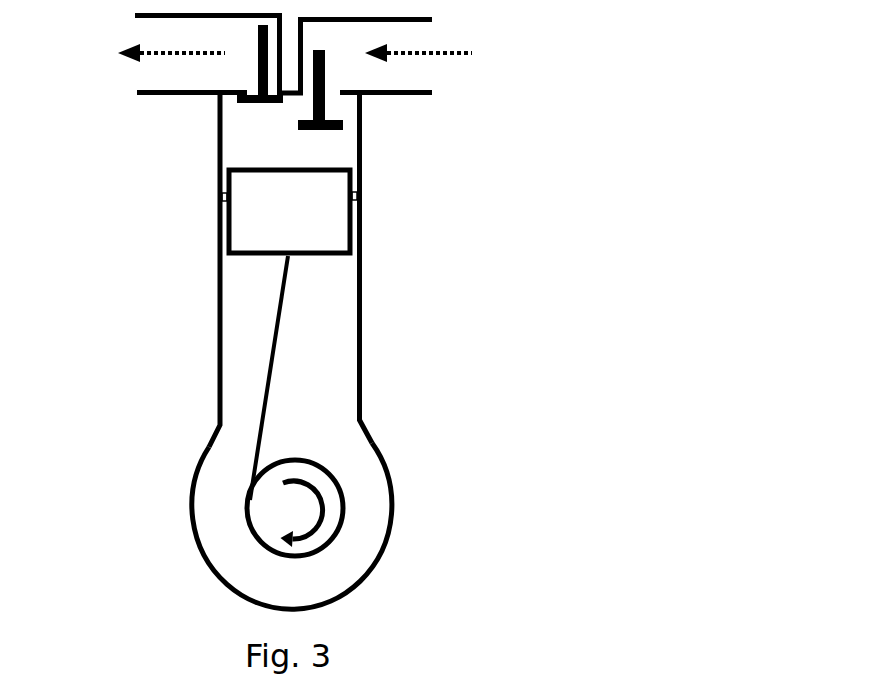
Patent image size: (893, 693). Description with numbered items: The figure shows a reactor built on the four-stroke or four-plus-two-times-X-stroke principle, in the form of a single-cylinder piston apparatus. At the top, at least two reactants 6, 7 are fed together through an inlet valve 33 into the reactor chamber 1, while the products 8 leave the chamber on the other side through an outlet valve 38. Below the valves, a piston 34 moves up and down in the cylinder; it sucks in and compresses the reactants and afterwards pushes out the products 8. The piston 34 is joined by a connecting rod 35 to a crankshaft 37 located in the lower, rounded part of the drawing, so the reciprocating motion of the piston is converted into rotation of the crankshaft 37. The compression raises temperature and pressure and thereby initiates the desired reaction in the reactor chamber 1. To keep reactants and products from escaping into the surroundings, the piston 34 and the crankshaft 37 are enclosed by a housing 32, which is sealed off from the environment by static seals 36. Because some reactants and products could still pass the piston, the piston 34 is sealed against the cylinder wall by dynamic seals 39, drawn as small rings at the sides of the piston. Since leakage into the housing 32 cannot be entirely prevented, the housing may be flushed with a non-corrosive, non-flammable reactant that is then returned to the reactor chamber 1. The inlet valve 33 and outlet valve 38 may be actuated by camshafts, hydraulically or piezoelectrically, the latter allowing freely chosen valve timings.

The reactor chamber 1 is at (265, 141).
The reactant 6 is at (452, 52).
The reactant 7 is at (452, 52).
The products 8 is at (136, 56).
The housing 32 is at (288, 442).
The inlet valve 33 is at (343, 123).
The piston 34 is at (285, 224).
The connecting rod 35 is at (275, 330).
The static seals 36 is at (362, 417).
The crankshaft 37 is at (295, 506).
The outlet valve 38 is at (262, 100).
The dynamic seals 39 is at (222, 200).